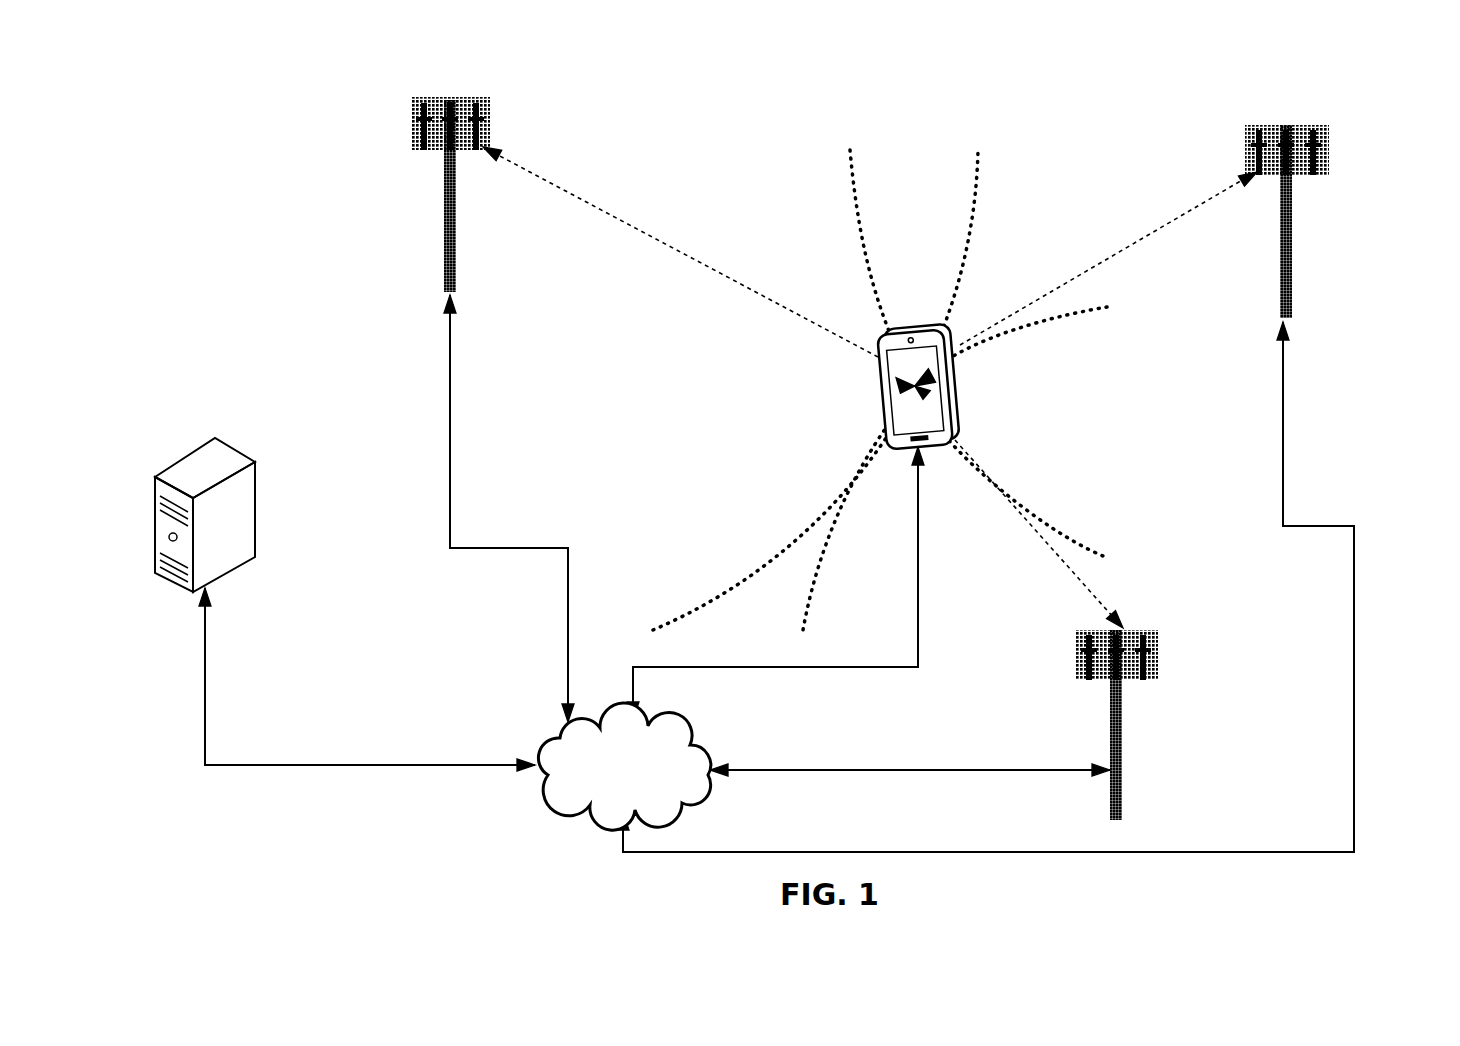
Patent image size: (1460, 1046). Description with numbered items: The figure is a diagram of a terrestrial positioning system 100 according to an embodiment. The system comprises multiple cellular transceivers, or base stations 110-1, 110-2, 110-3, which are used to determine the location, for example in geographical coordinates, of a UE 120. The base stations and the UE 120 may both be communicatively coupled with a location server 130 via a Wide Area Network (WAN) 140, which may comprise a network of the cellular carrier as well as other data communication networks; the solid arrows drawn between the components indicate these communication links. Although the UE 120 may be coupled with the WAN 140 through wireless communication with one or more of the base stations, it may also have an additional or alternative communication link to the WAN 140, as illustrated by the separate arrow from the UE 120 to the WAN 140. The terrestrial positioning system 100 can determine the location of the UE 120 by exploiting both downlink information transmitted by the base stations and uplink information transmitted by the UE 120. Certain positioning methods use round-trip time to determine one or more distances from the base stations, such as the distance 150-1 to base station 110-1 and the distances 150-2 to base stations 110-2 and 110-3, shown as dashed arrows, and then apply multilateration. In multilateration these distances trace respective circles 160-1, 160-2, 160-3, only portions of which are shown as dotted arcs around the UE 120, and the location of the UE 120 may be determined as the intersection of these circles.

The terrestrial positioning system 100 is at (263, 92).
The base station 110-1 is at (450, 274).
The base station 110-2 is at (1290, 232).
The base station 110-3 is at (1122, 745).
The UE 120 is at (882, 385).
The location server 130 is at (232, 448).
The Wide Area Network (WAN) 140 is at (676, 735).
The distance 150-1 is at (532, 173).
The distance 150-2 is at (1052, 624).
The circle 160-1 is at (760, 560).
The circle 160-2 is at (1040, 320).
The circle 160-3 is at (1066, 538).